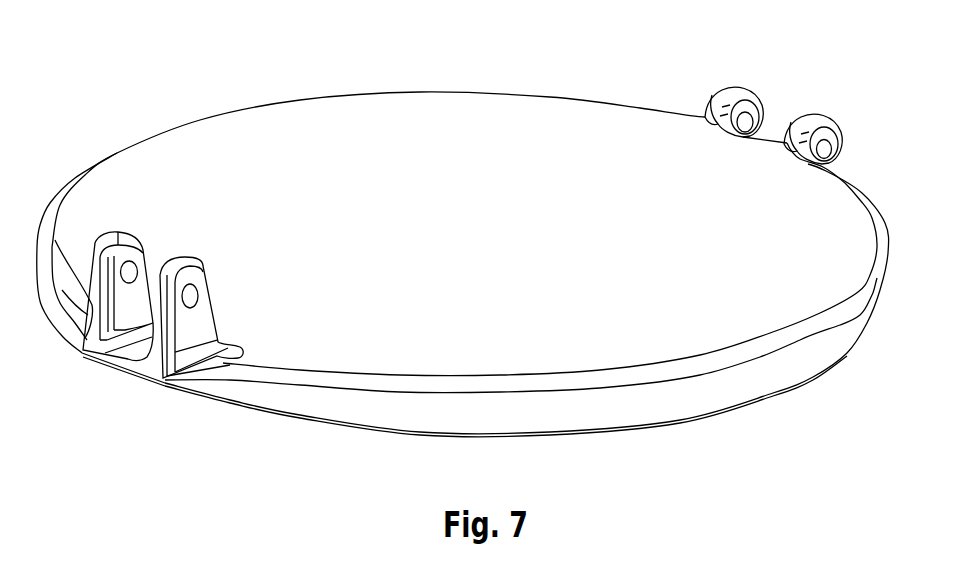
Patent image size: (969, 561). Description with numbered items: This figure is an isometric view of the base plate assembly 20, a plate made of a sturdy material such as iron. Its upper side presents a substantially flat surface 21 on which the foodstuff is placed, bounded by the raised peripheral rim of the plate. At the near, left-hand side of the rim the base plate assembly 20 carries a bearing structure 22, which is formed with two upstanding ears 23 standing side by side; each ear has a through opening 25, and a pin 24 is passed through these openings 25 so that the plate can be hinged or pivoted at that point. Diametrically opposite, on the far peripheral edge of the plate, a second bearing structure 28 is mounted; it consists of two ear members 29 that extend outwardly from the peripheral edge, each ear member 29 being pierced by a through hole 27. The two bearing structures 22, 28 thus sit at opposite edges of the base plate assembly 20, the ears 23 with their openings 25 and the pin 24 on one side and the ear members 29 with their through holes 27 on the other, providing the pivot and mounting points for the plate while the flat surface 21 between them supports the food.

The base plate assembly 20 is at (781, 410).
The flat surface 21 is at (515, 243).
The bearing structure 22 is at (97, 325).
The ears 23 is at (100, 240).
The pin 24 is at (201, 317).
The through openings 25 is at (137, 263).
The through holes 27 is at (822, 153).
The bearing structure 28 is at (840, 148).
The ear members 29 is at (715, 87).